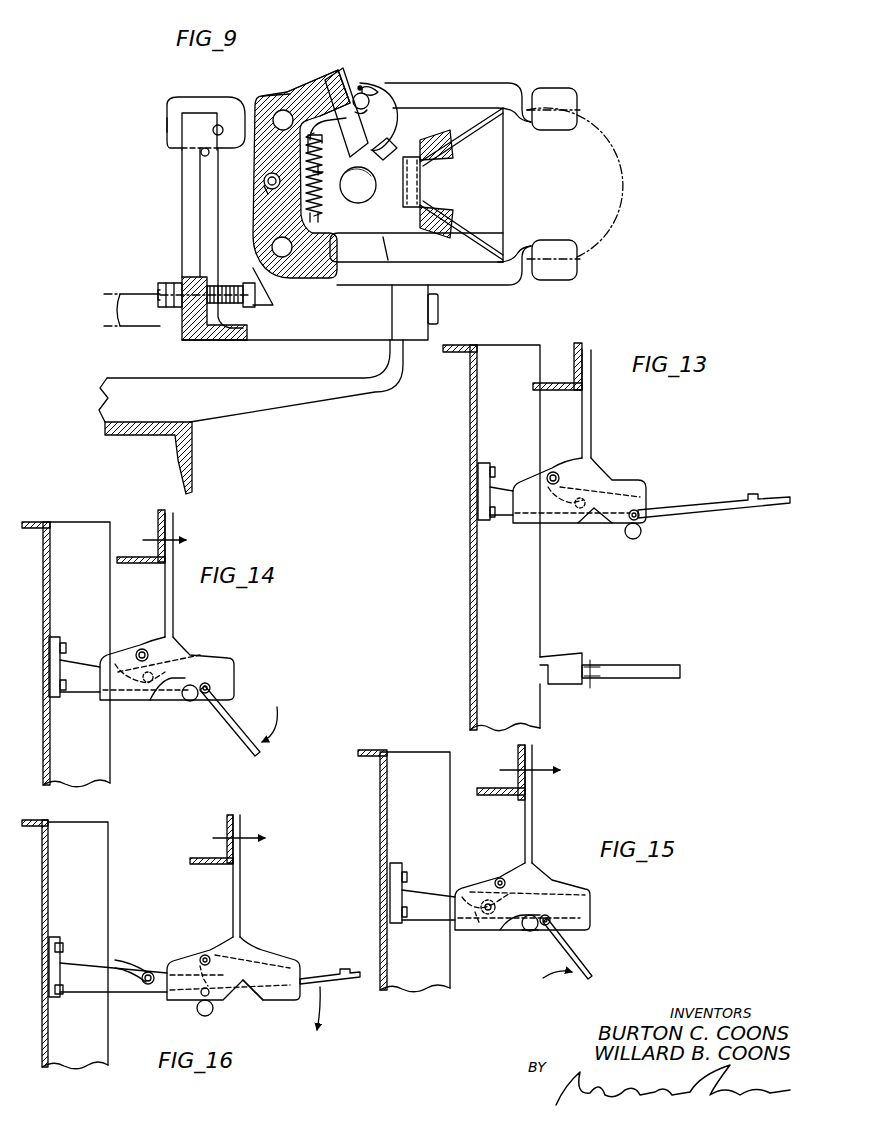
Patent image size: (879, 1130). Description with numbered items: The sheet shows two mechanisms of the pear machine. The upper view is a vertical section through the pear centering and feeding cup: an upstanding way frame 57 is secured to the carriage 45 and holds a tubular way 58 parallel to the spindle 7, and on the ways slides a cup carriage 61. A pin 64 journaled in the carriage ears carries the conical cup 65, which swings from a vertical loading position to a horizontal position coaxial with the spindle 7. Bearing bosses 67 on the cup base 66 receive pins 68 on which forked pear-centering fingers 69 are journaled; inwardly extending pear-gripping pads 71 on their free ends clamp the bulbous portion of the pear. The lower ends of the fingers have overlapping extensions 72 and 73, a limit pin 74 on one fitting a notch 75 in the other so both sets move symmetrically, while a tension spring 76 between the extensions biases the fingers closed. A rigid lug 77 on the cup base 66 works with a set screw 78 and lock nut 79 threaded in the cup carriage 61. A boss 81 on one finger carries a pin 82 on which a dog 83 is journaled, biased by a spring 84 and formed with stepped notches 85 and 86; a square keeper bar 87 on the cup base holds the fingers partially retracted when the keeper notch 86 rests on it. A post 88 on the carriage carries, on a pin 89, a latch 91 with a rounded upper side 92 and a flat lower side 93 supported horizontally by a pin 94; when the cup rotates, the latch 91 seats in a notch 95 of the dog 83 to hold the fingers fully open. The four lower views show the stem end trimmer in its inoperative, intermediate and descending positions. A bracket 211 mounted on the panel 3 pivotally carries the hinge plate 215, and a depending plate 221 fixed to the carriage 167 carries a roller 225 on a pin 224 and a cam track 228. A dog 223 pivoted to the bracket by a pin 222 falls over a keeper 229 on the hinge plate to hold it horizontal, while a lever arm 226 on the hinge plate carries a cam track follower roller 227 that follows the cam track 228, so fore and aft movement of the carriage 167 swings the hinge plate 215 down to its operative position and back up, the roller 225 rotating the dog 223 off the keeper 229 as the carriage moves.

In FIG. 13, the panel 3 is at (471, 602).
In FIG. 14, the panel 3 is at (40, 521).
In FIG. 15, the panel 3 is at (380, 811).
In FIG. 16, the panel 3 is at (42, 886).
In FIG. 13, the spindle 7 is at (660, 667).
In FIG. 9, the carriage 45 is at (180, 451).
In FIG. 9, the way frame 57 is at (243, 402).
In FIG. 9, the tubular way 58 is at (143, 320).
In FIG. 9, the cup carriage 61 is at (227, 340).
In FIG. 9, the pin 64 is at (371, 196).
In FIG. 9, the conical cup 65 is at (467, 242).
In FIG. 9, the cup base 66 is at (377, 226).
In FIG. 9, the bearing boss 67 is at (292, 93).
In FIG. 9, the pin 68 is at (280, 112).
In FIG. 9, the pear-centering finger 69 is at (442, 86).
In FIG. 9, the pear-gripping pad 71 is at (567, 74).
In FIG. 9, the finger extension 72 is at (252, 168).
In FIG. 9, the finger extension 73 is at (280, 208).
In FIG. 9, the limit pin 74 is at (264, 190).
In FIG. 9, the notch 75 is at (271, 170).
In FIG. 9, the tension spring 76 is at (320, 211).
In FIG. 9, the rigid lug 77 is at (287, 302).
In FIG. 9, the set screw 78 is at (248, 308).
In FIG. 9, the lock nut 79 is at (172, 279).
In FIG. 9, the boss 81 is at (377, 93).
In FIG. 9, the pin 82 is at (364, 110).
In FIG. 9, the dog 83 is at (398, 130).
In FIG. 9, the spring 84 is at (322, 80).
In FIG. 9, the stepped notch 85 is at (321, 149).
In FIG. 9, the keeper notch 86 is at (384, 155).
In FIG. 9, the keeper bar 87 is at (319, 172).
In FIG. 9, the post 88 is at (182, 196).
In FIG. 9, the pin 89 is at (212, 130).
In FIG. 9, the latch 91 is at (167, 127).
In FIG. 9, the rounded upper side 92 is at (188, 104).
In FIG. 9, the flat lower side 93 is at (176, 148).
In FIG. 9, the pin 94 is at (201, 156).
In FIG. 9, the notch 95 is at (347, 73).
In FIG. 13, the carriage 167 is at (575, 376).
In FIG. 14, the carriage 167 is at (134, 557).
In FIG. 15, the carriage 167 is at (494, 788).
In FIG. 16, the carriage 167 is at (200, 858).
In FIG. 13, the bracket 211 is at (505, 520).
In FIG. 14, the bracket 211 is at (87, 667).
In FIG. 15, the bracket 211 is at (431, 925).
In FIG. 16, the bracket 211 is at (87, 967).
In FIG. 15, the hinge plate 215 is at (578, 956).
In FIG. 13, the depending plate 221 is at (586, 404).
In FIG. 14, the depending plate 221 is at (169, 575).
In FIG. 15, the depending plate 221 is at (533, 841).
In FIG. 16, the depending plate 221 is at (262, 947).
In FIG. 13, the pin 222 is at (602, 496).
In FIG. 14, the pin 222 is at (144, 665).
In FIG. 15, the pin 222 is at (470, 932).
In FIG. 16, the pin 222 is at (150, 971).
In FIG. 13, the dog 223 is at (640, 480).
In FIG. 14, the dog 223 is at (198, 649).
In FIG. 15, the dog 223 is at (590, 894).
In FIG. 16, the dog 223 is at (118, 962).
In FIG. 15, the pin 224 is at (500, 877).
In FIG. 16, the pin 224 is at (211, 960).
In FIG. 16, the roller 225 is at (208, 941).
In FIG. 15, the lever arm 226 is at (535, 933).
In FIG. 16, the lever arm 226 is at (200, 997).
In FIG. 13, the cam track follower roller 227 is at (625, 535).
In FIG. 14, the cam track follower roller 227 is at (190, 693).
In FIG. 15, the cam track follower roller 227 is at (527, 933).
In FIG. 16, the cam track follower roller 227 is at (204, 1017).
In FIG. 13, the cam track 228 is at (582, 523).
In FIG. 15, the cam track 228 is at (509, 923).
In FIG. 16, the cam track 228 is at (233, 990).
In FIG. 13, the keeper 229 is at (643, 505).
In FIG. 14, the keeper 229 is at (235, 688).
In FIG. 15, the keeper 229 is at (590, 918).
In FIG. 16, the keeper 229 is at (330, 999).